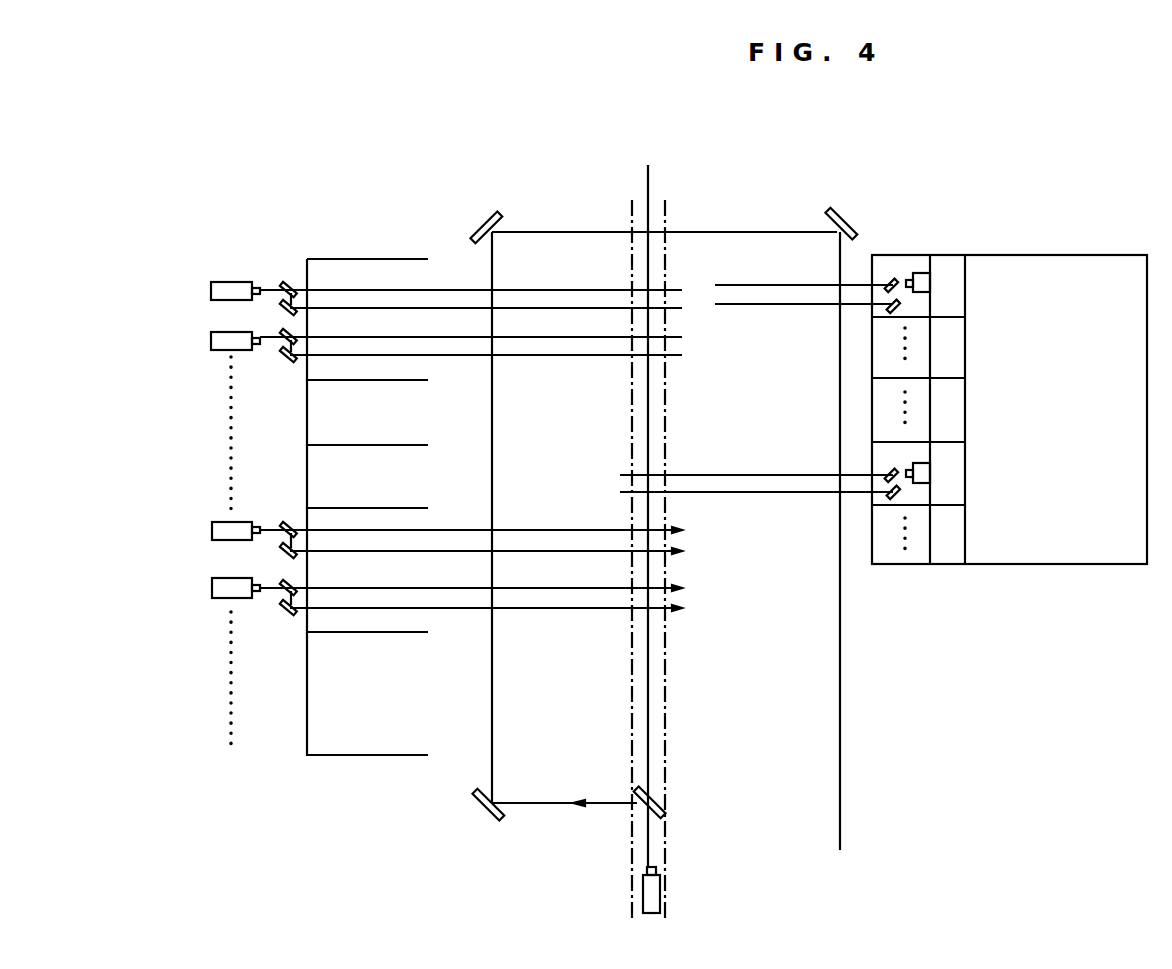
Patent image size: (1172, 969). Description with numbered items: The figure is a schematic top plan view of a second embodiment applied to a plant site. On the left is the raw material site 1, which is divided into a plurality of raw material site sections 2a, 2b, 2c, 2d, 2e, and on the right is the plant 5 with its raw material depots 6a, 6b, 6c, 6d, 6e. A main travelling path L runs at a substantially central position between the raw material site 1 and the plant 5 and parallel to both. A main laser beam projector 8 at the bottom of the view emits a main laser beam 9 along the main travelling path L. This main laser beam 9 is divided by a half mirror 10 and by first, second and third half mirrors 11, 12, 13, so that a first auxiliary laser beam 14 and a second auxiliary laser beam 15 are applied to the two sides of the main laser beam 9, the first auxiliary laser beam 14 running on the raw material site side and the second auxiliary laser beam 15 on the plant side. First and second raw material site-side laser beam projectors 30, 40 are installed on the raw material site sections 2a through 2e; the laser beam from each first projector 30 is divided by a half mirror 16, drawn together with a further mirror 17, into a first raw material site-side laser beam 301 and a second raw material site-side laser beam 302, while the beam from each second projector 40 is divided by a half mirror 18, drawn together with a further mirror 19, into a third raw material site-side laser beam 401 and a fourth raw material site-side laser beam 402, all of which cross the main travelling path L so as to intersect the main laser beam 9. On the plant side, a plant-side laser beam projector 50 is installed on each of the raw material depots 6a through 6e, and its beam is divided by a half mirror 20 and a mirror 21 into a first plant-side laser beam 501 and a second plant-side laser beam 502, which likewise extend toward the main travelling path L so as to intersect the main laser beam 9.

The raw material site 1 is at (290, 427).
The raw material site section 2a is at (332, 264).
The raw material site section 2b is at (307, 402).
The raw material site section 2c is at (307, 468).
The raw material site section 2d is at (306, 620).
The raw material site section 2e is at (326, 757).
The plant 5 is at (1022, 255).
The raw material depot 6a is at (917, 255).
The raw material depot 6b is at (934, 328).
The raw material depot 6c is at (934, 399).
The raw material depot 6d is at (934, 450).
The raw material depot 6e is at (932, 566).
The main laser beam projector 8 is at (661, 893).
The main laser beam 9 is at (655, 699).
The half mirror 10 is at (667, 803).
The first half mirror 11 is at (478, 818).
The second half mirror 12 is at (476, 225).
The third half mirror 13 is at (840, 212).
The first auxiliary laser beam 14 is at (494, 421).
The second auxiliary laser beam 15 is at (807, 541).
The half mirror 16 is at (286, 284).
The mirror 17 is at (284, 302).
The half mirror 18 is at (280, 335).
The mirror 19 is at (282, 360).
The half mirror 20 is at (892, 277).
The mirror 21 is at (882, 308).
The first raw material site-side laser beam projector 30 is at (233, 280).
The second raw material site-side laser beam projector 40 is at (211, 344).
The plant-side laser beam projector 50 is at (928, 280).
The first raw material site-side laser beam 301 is at (412, 287).
The second raw material site-side laser beam 302 is at (412, 305).
The third raw material site-side laser beam 401 is at (380, 333).
The fourth raw material site-side laser beam 402 is at (486, 374).
The first plant-side laser beam 501 is at (765, 285).
The second plant-side laser beam 502 is at (764, 308).
The main travelling path L is at (666, 215).